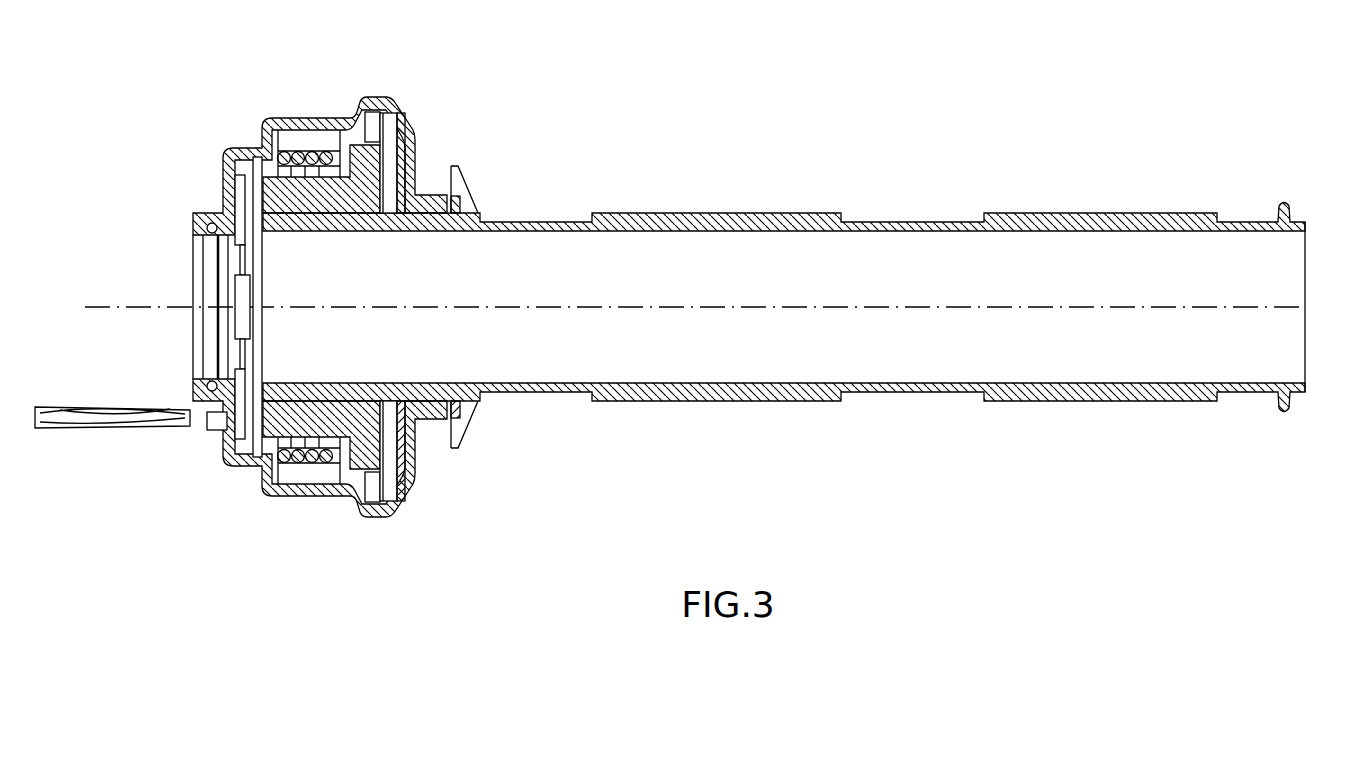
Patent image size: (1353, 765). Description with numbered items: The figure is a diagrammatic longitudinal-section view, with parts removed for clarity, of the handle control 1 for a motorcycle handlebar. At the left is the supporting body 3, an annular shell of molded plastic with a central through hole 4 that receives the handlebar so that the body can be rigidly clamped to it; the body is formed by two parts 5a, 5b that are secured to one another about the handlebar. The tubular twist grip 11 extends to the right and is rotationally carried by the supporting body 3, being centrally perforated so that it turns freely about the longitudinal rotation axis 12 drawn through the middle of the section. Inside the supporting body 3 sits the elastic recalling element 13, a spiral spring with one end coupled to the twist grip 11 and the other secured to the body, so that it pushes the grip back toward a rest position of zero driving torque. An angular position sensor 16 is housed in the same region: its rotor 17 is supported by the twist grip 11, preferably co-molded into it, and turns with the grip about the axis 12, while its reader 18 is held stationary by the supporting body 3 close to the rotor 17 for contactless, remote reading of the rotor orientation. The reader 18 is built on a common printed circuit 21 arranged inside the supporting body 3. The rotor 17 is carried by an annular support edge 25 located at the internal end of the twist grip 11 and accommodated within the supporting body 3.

The handle control 1 is at (884, 76).
The supporting body 3 is at (418, 518).
The central through hole 4 is at (425, 226).
The part of the supporting body 5a is at (330, 504).
The part of the supporting body 5b is at (346, 105).
The twist grip 11 is at (720, 402).
The longitudinal rotation axis 12 is at (1080, 310).
The elastic recalling element 13 is at (303, 146).
The angular position sensor 16 is at (233, 120).
The rotor 17 is at (243, 418).
The reader 18 is at (200, 193).
The printed circuit 21 is at (228, 160).
The support edge 25 is at (272, 413).